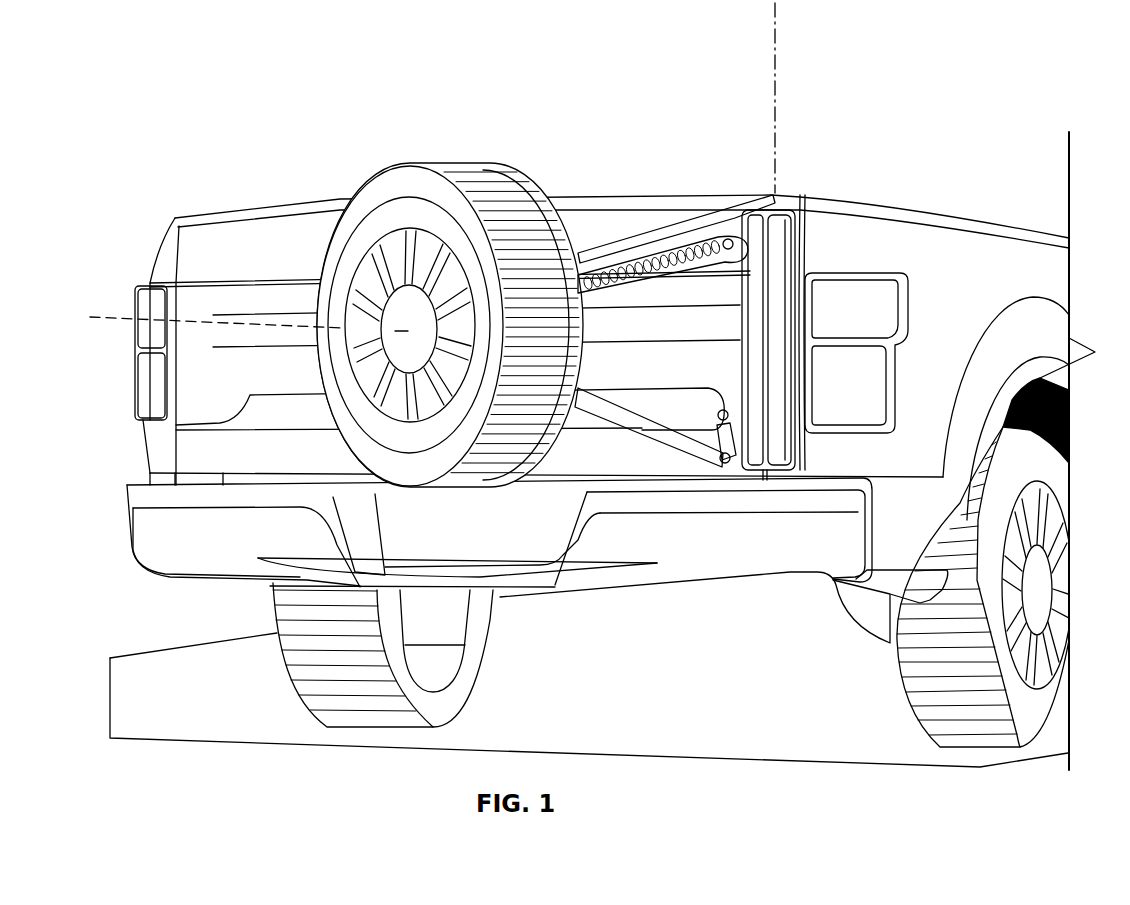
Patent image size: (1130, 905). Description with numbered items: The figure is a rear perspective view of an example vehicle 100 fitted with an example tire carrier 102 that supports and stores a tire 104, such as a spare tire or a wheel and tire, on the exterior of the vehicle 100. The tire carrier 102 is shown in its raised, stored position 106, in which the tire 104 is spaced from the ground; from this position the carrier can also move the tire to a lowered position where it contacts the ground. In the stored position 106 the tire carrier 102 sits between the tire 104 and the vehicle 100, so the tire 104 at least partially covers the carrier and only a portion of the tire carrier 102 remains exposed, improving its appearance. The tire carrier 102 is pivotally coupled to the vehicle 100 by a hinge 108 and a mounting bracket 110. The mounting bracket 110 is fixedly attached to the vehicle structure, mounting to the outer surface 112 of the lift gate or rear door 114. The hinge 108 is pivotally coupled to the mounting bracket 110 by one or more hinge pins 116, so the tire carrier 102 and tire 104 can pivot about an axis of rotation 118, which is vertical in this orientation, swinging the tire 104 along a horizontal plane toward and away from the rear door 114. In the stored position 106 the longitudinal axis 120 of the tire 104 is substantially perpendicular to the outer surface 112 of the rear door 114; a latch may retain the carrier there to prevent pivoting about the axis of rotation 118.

The vehicle 100 is at (203, 62).
The tire carrier 102 is at (632, 176).
The tire 104 is at (462, 163).
The stored position 106 is at (348, 168).
The hinge 108 is at (747, 470).
The mounting bracket 110 is at (785, 224).
The outer surface 112 is at (283, 259).
The rear door 114 is at (190, 268).
The hinge pins 116 is at (778, 212).
The axis of rotation 118 is at (776, 12).
The longitudinal axis 120 is at (125, 320).